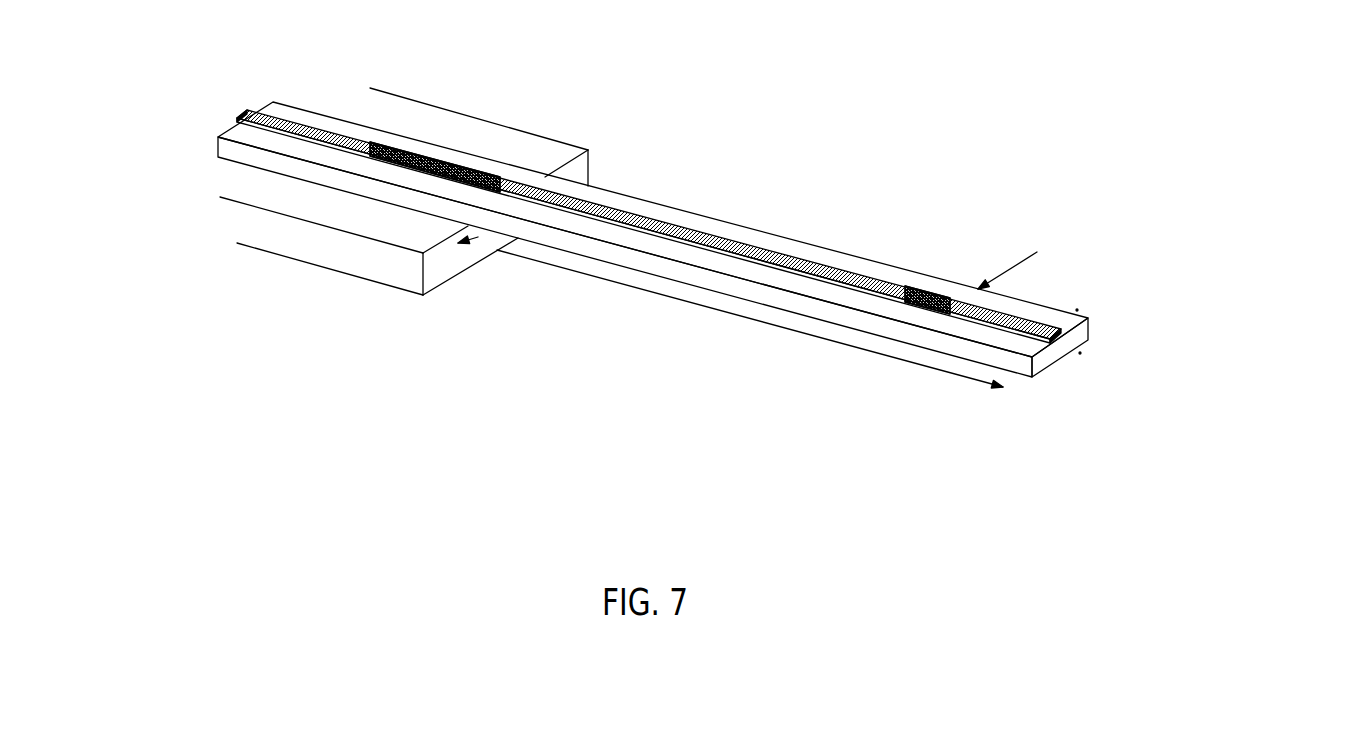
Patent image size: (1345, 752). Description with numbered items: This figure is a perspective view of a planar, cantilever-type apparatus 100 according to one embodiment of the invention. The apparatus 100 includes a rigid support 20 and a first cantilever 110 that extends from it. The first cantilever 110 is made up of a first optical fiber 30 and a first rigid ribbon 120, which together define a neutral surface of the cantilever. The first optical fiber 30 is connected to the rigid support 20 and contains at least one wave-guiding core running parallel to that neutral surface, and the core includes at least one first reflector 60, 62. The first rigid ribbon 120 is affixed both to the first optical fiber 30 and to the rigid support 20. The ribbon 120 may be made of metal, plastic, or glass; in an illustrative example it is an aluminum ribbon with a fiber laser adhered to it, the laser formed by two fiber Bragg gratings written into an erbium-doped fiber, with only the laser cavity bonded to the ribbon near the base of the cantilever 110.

The planar, cantilever-type apparatus 100 is at (512, 305).
The rigid support 20 is at (387, 217).
The first cantilever 110 is at (1125, 352).
The first rigid ribbon 120 is at (1027, 307).
The first optical fiber 30 is at (990, 307).
The first reflector 60 is at (937, 295).
The first reflector 62 is at (480, 168).